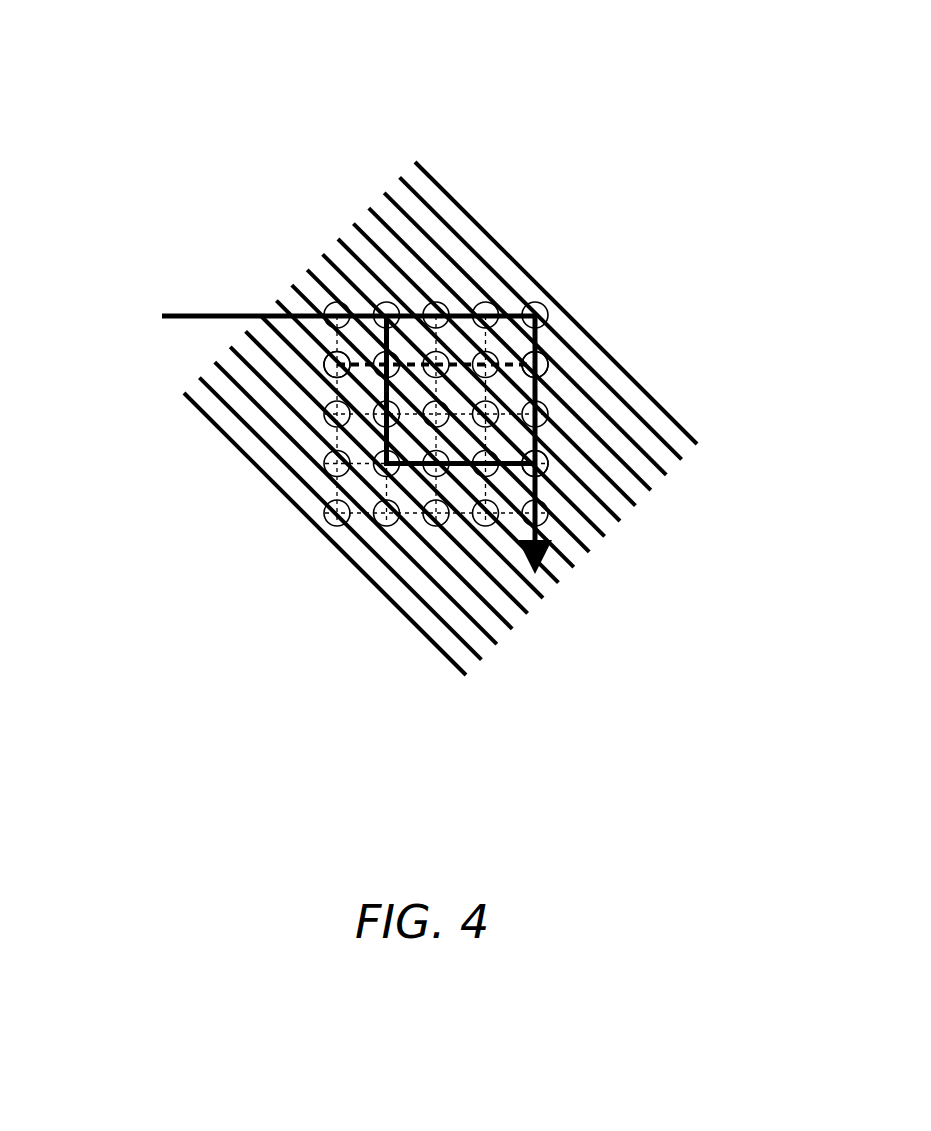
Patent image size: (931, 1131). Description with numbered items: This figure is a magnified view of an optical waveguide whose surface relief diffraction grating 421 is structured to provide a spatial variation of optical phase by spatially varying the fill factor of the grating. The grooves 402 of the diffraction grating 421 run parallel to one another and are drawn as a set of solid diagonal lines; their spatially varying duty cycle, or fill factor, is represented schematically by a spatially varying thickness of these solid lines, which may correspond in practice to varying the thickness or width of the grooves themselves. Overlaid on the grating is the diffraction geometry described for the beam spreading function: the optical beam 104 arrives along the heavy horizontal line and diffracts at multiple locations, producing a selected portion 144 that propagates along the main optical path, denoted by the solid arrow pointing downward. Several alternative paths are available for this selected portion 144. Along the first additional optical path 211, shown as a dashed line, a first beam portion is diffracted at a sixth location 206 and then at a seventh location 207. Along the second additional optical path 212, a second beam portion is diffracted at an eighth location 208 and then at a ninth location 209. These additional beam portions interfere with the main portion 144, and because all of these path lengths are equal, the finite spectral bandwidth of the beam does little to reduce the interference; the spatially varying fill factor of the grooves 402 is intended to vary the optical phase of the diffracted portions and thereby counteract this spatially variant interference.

The surface relief diffraction grating 421 is at (456, 133).
The optical beam 104 is at (188, 313).
The first additional optical path 211 is at (333, 350).
The sixth location 206 is at (328, 374).
The eighth location 208 is at (385, 455).
The second additional optical path 212 is at (463, 466).
The seventh location 207 is at (545, 356).
The ninth location 209 is at (550, 455).
The grooves 402 is at (677, 423).
The selected portion 144 is at (543, 538).